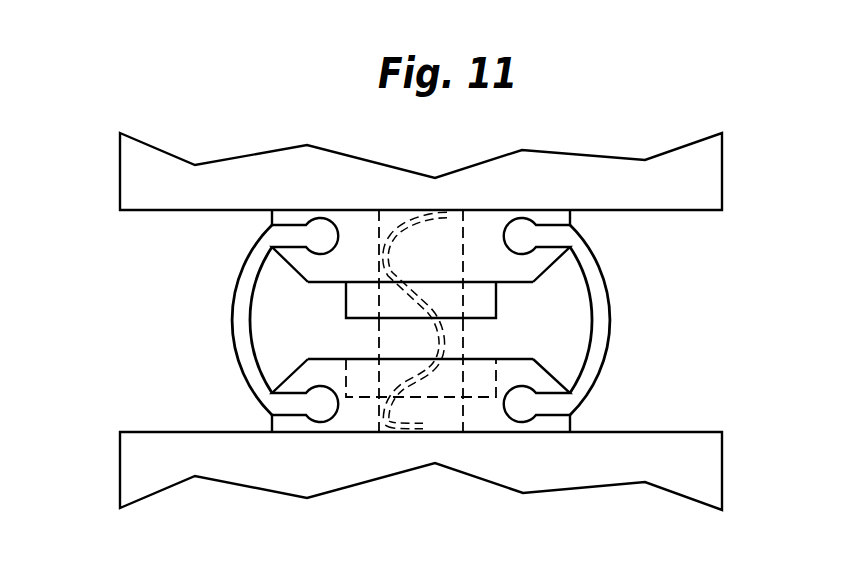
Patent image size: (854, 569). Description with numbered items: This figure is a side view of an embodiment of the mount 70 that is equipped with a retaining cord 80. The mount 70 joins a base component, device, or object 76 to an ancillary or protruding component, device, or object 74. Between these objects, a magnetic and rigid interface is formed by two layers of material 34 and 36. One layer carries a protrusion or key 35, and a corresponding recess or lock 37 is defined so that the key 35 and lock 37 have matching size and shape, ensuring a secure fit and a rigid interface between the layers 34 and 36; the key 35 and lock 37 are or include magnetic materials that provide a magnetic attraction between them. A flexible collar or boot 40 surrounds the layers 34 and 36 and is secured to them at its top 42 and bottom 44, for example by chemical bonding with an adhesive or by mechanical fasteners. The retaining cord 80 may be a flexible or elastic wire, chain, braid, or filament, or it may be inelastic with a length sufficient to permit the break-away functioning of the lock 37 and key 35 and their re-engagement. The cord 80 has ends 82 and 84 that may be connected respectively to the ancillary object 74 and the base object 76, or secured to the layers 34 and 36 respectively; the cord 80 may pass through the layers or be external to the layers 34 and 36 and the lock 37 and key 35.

The mount 70 is at (146, 283).
The ancillary or protruding component, device or object 74 is at (703, 173).
The base component, device, or object 76 is at (687, 483).
The layer of material 34 is at (353, 223).
The layer of material 36 is at (353, 420).
The top of collar 42 is at (549, 225).
The bottom of collar 44 is at (540, 422).
The key 35 is at (365, 299).
The flexible collar or boot 40 is at (445, 375).
The lock 37 is at (488, 397).
The retaining cord 80 is at (393, 272).
The end of cord 82 is at (455, 210).
The end of cord 84 is at (418, 432).